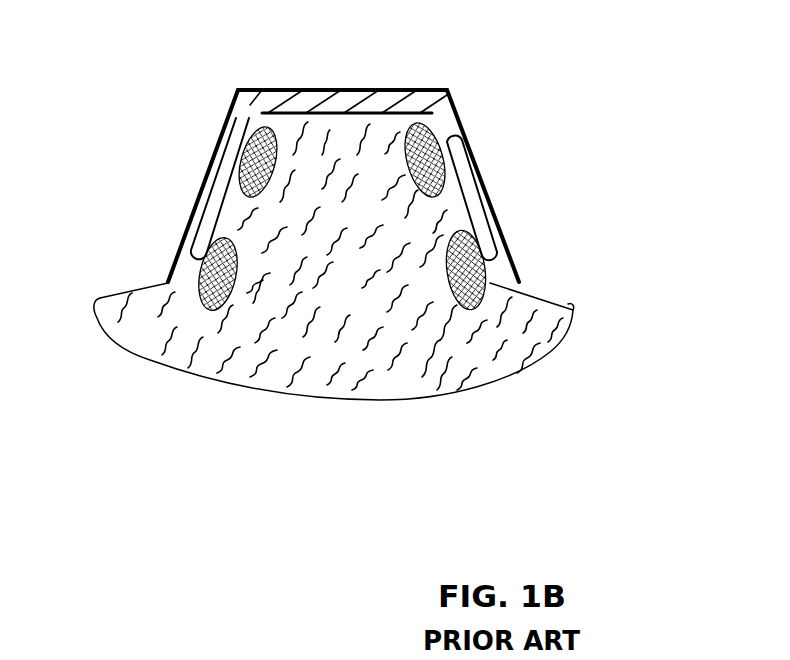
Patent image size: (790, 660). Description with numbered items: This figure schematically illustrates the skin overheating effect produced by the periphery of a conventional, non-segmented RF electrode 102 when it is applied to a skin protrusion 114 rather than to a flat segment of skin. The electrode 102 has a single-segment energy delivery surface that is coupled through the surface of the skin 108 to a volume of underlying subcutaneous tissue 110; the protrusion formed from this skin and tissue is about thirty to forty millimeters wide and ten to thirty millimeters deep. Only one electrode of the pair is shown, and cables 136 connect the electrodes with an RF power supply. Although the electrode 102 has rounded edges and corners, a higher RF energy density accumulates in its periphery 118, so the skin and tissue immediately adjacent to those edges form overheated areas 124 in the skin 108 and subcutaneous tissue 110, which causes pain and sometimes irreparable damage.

The non-segmented RF electrode 102 is at (193, 219).
The skin 108 is at (550, 300).
The subcutaneous tissue 110 is at (143, 338).
The skin protrusion 114 is at (344, 113).
The periphery 118 is at (235, 133).
The overheated areas 124 is at (262, 115).
The cables 136 is at (200, 203).